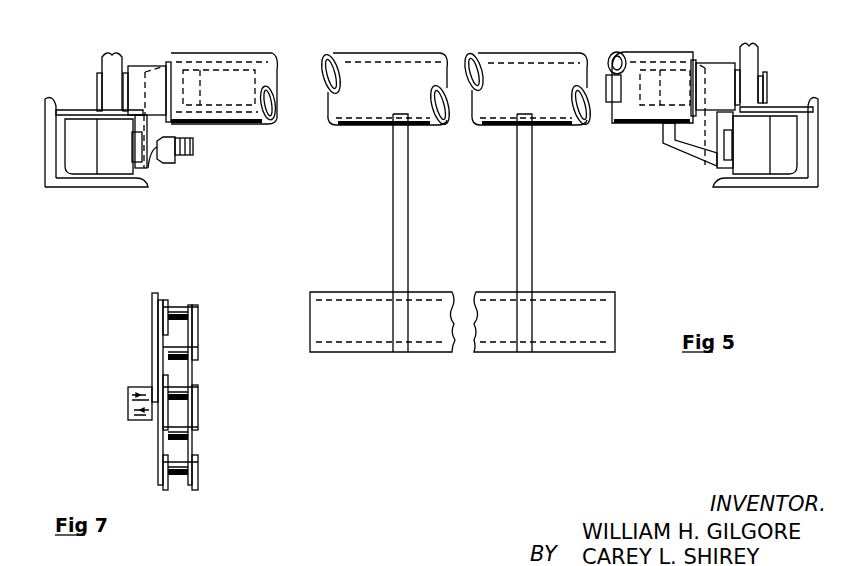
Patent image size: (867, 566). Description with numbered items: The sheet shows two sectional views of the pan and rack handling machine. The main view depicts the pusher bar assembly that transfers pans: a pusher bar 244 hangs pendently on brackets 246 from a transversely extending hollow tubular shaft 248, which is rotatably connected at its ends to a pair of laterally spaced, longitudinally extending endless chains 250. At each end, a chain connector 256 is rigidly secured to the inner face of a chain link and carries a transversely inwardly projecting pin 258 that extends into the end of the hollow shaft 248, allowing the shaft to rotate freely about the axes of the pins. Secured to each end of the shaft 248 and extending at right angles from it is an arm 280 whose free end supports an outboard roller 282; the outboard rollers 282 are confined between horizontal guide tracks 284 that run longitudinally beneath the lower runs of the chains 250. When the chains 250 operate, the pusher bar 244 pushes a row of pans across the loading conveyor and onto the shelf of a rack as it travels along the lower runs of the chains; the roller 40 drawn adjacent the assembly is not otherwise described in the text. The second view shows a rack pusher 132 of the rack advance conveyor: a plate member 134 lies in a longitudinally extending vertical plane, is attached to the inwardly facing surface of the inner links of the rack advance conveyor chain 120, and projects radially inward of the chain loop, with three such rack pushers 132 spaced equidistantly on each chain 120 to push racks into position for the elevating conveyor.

In FIG. 5, the roller 40 is at (373, 50).
In FIG. 7, the rack advance conveyor chain 120 is at (200, 425).
In FIG. 7, the rack pusher 132 is at (126, 408).
In FIG. 7, the plate member 134 is at (152, 347).
In FIG. 5, the pusher bar 244 is at (558, 353).
In FIG. 5, the bracket 246 is at (408, 244).
In FIG. 5, the hollow tubular shaft 248 is at (507, 52).
In FIG. 5, the endless chain 250 is at (97, 90).
In FIG. 5, the chain connector 256 is at (148, 66).
In FIG. 5, the pin 258 is at (600, 86).
In FIG. 5, the arm 280 is at (160, 170).
In FIG. 5, the outboard roller 282 is at (97, 152).
In FIG. 5, the horizontal guide track 284 is at (60, 143).